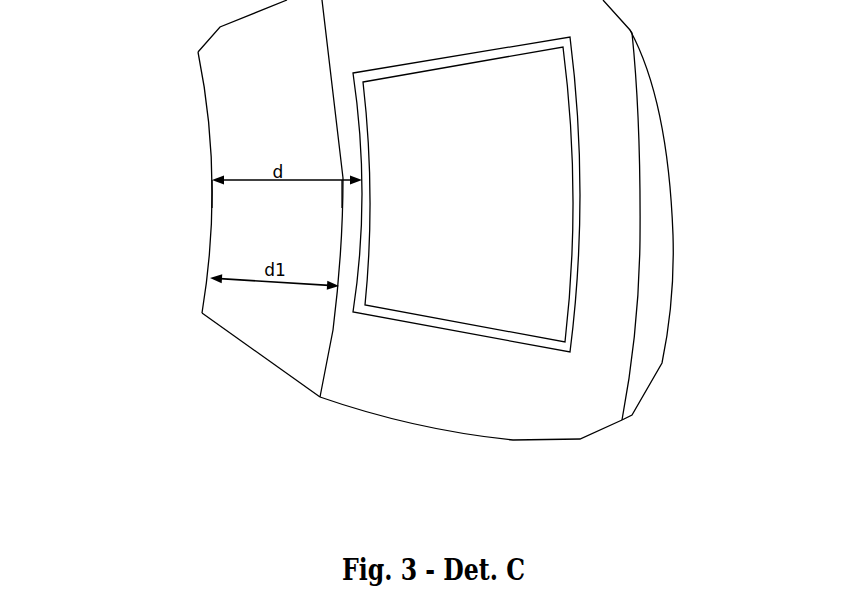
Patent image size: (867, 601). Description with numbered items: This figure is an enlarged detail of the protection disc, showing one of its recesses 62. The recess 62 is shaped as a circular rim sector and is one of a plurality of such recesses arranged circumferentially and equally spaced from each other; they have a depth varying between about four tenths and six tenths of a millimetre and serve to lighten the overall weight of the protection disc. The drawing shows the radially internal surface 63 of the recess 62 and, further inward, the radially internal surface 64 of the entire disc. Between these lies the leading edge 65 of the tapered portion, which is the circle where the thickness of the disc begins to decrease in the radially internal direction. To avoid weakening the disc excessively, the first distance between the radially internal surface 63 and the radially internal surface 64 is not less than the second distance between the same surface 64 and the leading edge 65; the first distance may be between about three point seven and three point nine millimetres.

The recess 62 is at (507, 187).
The radially internal surface of the recess 63 is at (346, 123).
The radially internal surface of the disc 64 is at (201, 238).
The leading edge of the tapered portion 65 is at (319, 352).